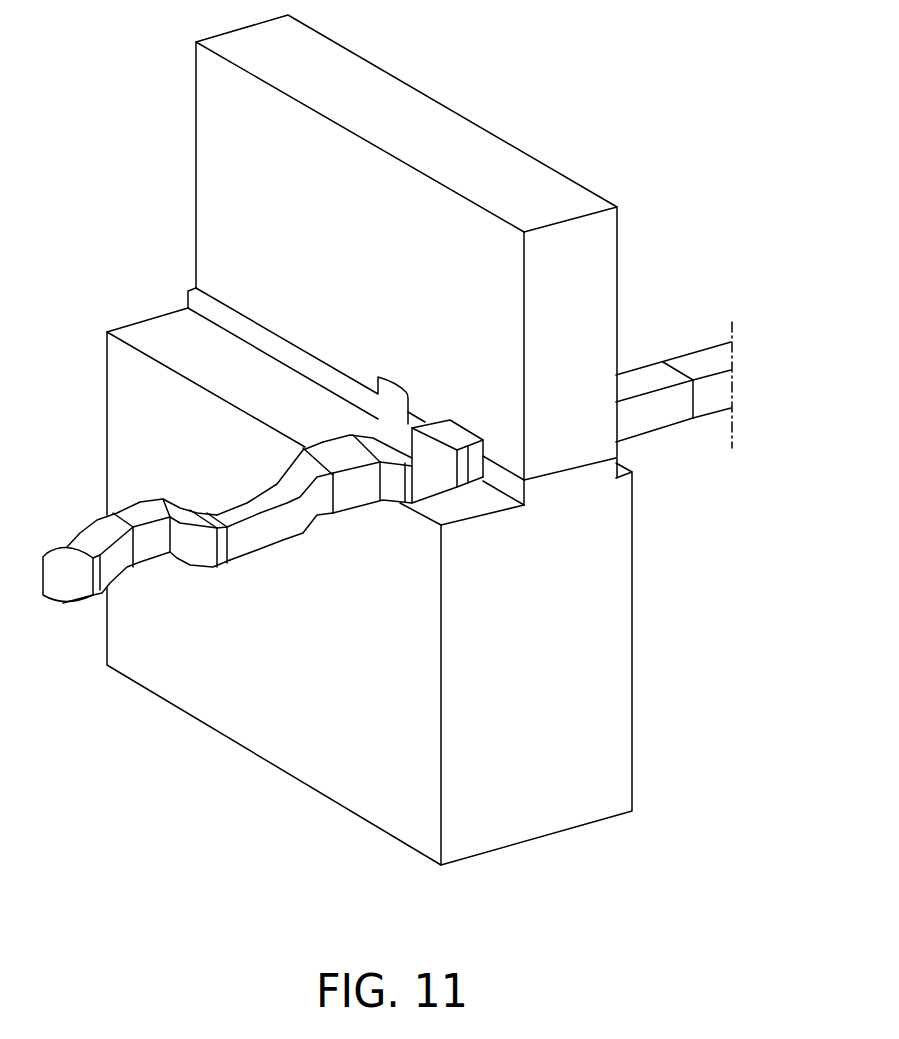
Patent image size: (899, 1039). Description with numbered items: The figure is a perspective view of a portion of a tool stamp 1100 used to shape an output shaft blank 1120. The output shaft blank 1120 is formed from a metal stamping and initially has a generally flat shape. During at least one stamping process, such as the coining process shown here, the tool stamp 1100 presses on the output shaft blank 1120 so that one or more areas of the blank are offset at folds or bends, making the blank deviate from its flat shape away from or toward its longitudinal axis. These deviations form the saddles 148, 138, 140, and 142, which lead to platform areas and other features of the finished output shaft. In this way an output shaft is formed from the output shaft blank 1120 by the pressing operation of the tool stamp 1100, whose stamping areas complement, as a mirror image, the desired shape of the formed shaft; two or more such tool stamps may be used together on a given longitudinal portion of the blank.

The tool stamp 1100 is at (185, 81).
The output shaft blank 1120 is at (690, 340).
The saddle 138 is at (147, 515).
The saddle 140 is at (258, 556).
The saddle 142 is at (333, 452).
The saddle 148 is at (68, 607).